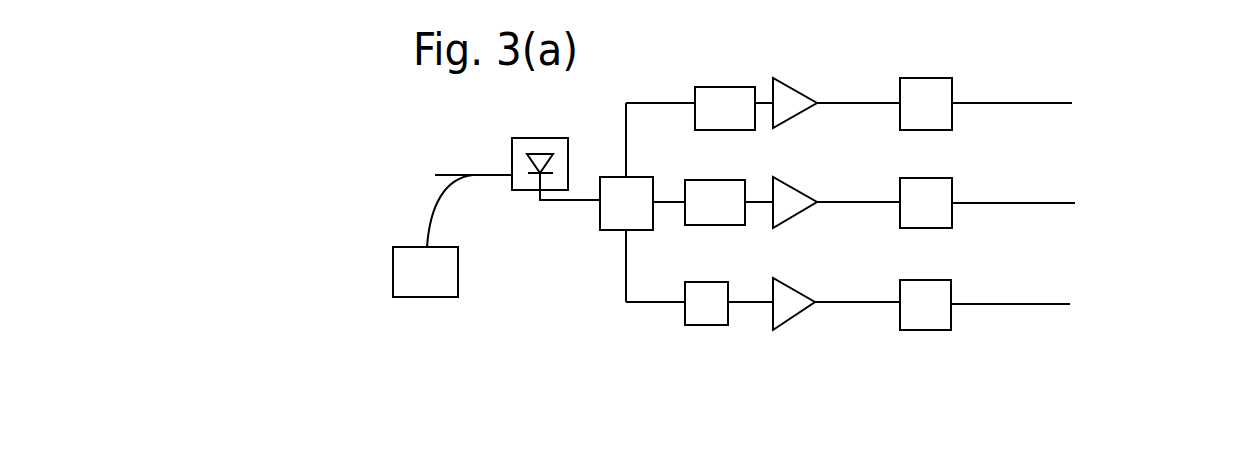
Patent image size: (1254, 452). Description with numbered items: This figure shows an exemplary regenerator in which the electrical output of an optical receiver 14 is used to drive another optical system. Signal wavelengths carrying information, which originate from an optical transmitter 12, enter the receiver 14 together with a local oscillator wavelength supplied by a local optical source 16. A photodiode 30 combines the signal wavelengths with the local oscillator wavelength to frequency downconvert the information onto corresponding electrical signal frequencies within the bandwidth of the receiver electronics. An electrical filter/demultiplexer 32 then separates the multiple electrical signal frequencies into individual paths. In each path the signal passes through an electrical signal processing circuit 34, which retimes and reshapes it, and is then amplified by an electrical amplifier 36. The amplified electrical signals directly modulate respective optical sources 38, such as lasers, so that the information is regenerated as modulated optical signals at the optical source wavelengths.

The optical transmitter 12 is at (1150, 298).
The optical receiver 14 is at (408, 152).
The local optical source 16 is at (440, 297).
The photodiode 30 is at (513, 190).
The electrical filter/demultiplexer 32 is at (602, 230).
The electrical signal processing circuit 34 is at (707, 130).
The electrical amplifier 36 is at (793, 120).
The optical source 38 is at (930, 130).